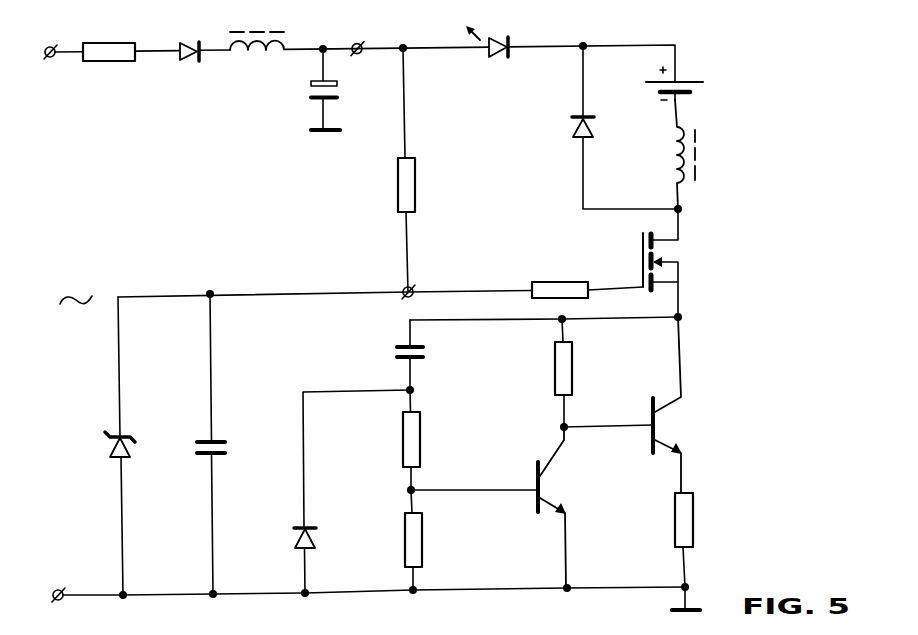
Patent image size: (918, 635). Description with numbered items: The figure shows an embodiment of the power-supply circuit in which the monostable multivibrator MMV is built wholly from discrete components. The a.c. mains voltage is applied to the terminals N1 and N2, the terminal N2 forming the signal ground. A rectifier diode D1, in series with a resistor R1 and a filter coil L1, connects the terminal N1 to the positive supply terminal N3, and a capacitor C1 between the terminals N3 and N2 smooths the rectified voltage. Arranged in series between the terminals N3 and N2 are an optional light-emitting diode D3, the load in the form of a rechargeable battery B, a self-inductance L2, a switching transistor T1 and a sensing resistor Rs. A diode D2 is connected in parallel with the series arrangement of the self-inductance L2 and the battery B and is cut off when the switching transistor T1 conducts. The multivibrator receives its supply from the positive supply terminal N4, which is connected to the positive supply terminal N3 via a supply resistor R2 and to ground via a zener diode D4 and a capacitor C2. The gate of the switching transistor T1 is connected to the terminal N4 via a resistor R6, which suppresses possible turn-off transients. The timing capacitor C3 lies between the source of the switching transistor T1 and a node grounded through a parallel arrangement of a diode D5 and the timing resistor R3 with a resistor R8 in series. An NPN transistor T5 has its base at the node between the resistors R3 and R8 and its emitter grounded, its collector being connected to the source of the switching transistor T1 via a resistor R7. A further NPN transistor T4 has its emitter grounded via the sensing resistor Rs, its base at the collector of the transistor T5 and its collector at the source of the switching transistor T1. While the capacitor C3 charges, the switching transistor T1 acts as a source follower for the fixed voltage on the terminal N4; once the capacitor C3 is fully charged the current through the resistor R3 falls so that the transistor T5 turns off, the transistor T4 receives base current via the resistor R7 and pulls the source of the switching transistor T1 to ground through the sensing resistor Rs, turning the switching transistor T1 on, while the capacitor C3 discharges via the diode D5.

The terminal N1 is at (51, 34).
The resistor R1 is at (109, 35).
The rectifier diode D1 is at (188, 35).
The filter coil L1 is at (257, 25).
The positive supply terminal N3 is at (362, 32).
The capacitor C1 is at (340, 89).
The light-emitting diode D3 is at (488, 31).
The diode D2 is at (610, 127).
The rechargeable battery B is at (674, 76).
The self-inductance L2 is at (697, 154).
The supply resistor R2 is at (421, 170).
The positive supply terminal N4 is at (424, 280).
The resistor R6 is at (560, 277).
The switching transistor T1 is at (677, 263).
The zener diode D4 is at (135, 446).
The capacitor C2 is at (223, 444).
The diode D5 is at (352, 491).
The timing capacitor C3 is at (426, 355).
The timing resistor R3 is at (426, 440).
The resistor R8 is at (428, 540).
The resistor R7 is at (577, 373).
The NPN transistor T5 is at (503, 507).
The NPN transistor T4 is at (637, 405).
The sensing resistor Rs is at (696, 551).
The monostable multivibrator MMV is at (645, 549).
The terminal N2 is at (60, 578).